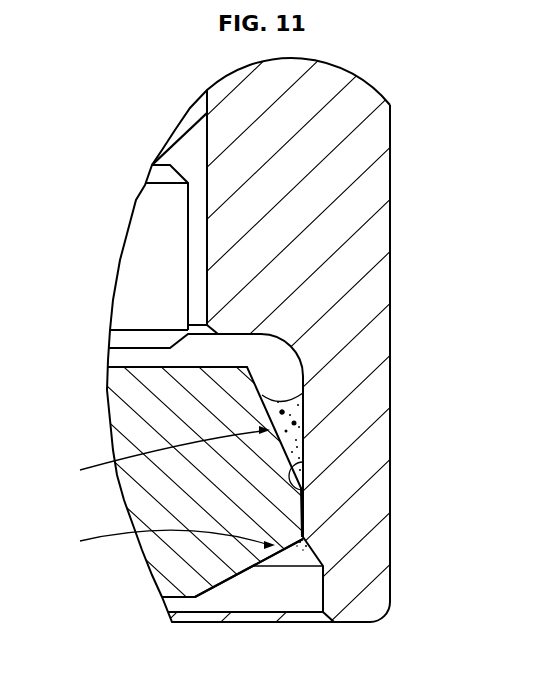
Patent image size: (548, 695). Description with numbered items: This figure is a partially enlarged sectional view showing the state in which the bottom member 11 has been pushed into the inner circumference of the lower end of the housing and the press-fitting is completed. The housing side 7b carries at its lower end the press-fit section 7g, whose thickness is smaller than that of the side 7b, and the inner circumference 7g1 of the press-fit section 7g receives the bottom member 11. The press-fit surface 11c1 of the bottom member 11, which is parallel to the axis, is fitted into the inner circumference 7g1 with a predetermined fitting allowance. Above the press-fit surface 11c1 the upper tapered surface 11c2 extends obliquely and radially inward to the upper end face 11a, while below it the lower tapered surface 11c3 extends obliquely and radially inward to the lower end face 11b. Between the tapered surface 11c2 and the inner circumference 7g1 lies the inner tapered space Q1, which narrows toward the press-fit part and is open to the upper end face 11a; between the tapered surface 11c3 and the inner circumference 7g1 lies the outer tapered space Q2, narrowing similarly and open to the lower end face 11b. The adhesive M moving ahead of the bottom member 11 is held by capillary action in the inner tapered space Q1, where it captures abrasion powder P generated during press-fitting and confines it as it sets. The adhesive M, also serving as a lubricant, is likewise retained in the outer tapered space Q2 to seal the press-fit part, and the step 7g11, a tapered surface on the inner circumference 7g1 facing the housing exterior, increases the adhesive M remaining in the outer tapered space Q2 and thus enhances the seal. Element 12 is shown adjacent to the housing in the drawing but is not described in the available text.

The side 7b is at (367, 144).
The press-fit section 7g is at (372, 496).
The inner circumference of the press-fit section 7g1 is at (303, 462).
The step 7g11 is at (306, 579).
The cover member 12 is at (137, 261).
The upper end face 11a is at (143, 366).
The bottom member 11 is at (135, 401).
The lower end face 11b is at (167, 606).
The press-fit surface 11c1 is at (304, 526).
The tapered surface 11c2 is at (252, 378).
The tapered surface 11c3 is at (227, 582).
The adhesive M is at (301, 441).
The abrasion powder P is at (284, 411).
The inner tapered space Q1 is at (159, 457).
The outer tapered space Q2 is at (161, 543).